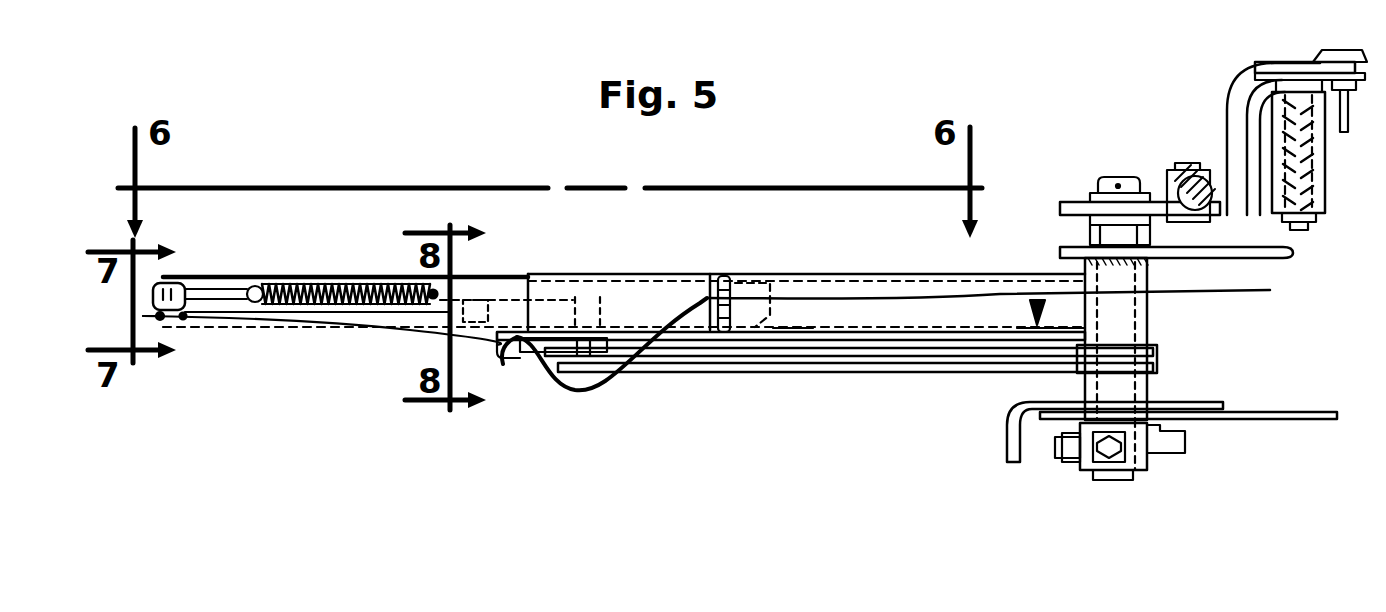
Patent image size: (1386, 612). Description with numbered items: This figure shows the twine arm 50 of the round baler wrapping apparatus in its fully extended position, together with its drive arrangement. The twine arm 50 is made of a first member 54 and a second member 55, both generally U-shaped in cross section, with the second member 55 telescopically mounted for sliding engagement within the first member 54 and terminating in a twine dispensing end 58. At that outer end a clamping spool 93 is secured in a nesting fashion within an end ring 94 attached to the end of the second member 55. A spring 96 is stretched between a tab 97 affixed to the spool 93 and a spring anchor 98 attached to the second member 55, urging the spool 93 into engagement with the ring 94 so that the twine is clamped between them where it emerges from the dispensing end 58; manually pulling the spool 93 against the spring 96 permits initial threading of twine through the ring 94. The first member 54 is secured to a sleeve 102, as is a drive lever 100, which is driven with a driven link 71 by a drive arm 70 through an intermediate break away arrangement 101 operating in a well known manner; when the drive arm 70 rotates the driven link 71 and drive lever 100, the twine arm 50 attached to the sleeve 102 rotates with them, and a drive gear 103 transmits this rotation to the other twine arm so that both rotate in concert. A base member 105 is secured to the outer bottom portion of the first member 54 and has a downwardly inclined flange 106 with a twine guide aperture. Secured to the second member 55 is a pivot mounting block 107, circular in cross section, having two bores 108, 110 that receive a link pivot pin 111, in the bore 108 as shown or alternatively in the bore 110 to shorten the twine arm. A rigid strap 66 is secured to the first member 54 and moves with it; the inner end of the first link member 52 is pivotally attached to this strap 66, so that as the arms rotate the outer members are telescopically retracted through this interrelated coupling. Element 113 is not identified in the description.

The twine arm 50 is at (592, 253).
The first link member 52 is at (945, 373).
The first member 54 is at (708, 276).
The second member 55 is at (528, 276).
The twine dispensing end 58 is at (179, 345).
The rigid strap 66 is at (1036, 300).
The drive arm 70 is at (1175, 178).
The driven link 71 is at (1232, 90).
The clamping spool 93 is at (183, 316).
The end ring 94 is at (163, 278).
The spring 96 is at (388, 276).
The tab 97 is at (250, 322).
The spring anchor 98 is at (433, 298).
The drive lever 100 is at (1268, 262).
The break away arrangement 101 is at (1325, 178).
The sleeve 102 is at (1145, 385).
The drive gear 103 is at (1187, 435).
The base member 105 is at (800, 340).
The downwardly inclined flange 106 is at (503, 365).
The pivot mounting block 107 is at (495, 350).
The bore 108 is at (580, 300).
The bore 110 is at (482, 300).
The link pivot pin 111 is at (585, 347).
The pivot pin 113 is at (731, 277).